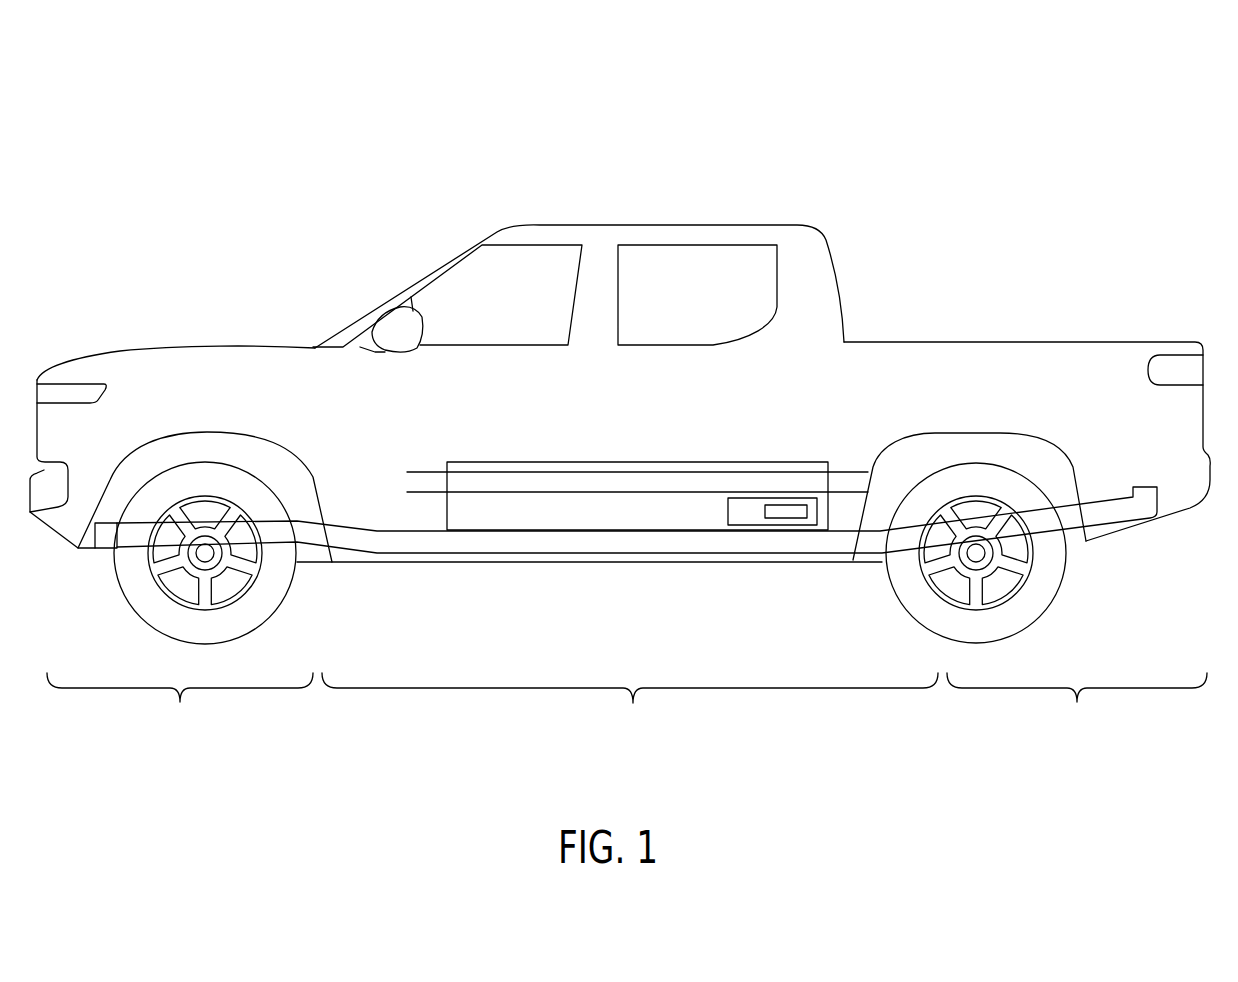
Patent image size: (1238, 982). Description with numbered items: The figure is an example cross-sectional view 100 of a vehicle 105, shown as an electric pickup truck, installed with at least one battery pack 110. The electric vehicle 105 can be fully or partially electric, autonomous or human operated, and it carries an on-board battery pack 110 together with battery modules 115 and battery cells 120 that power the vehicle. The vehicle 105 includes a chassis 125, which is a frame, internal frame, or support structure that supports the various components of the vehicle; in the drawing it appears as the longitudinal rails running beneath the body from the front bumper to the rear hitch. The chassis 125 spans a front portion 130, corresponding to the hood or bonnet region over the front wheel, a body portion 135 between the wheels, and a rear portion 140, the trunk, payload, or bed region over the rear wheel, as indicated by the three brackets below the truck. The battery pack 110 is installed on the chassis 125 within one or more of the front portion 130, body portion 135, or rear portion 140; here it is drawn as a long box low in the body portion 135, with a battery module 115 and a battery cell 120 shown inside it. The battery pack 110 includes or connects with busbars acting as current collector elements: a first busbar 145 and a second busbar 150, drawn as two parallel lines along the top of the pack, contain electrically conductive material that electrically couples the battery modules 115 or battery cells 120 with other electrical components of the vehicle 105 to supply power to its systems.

The cross-sectional view 100 is at (253, 148).
The vehicle 105 is at (558, 213).
The battery pack 110 is at (650, 461).
The battery module 115 is at (808, 526).
The battery cell 120 is at (787, 519).
The chassis 125 is at (110, 521).
The front portion 130 is at (180, 711).
The body portion 135 is at (630, 711).
The rear portion 140 is at (1077, 711).
The first busbar 145 is at (538, 470).
The second busbar 150 is at (497, 487).